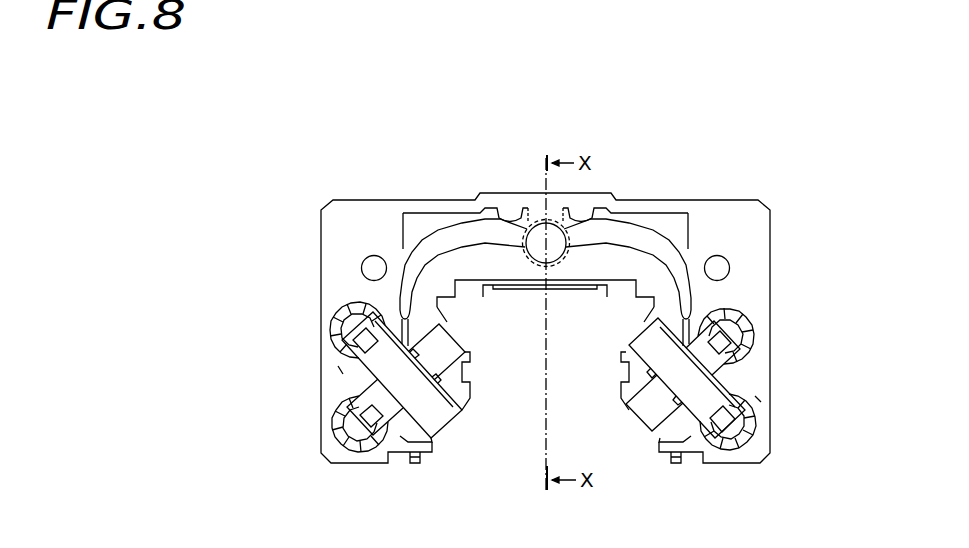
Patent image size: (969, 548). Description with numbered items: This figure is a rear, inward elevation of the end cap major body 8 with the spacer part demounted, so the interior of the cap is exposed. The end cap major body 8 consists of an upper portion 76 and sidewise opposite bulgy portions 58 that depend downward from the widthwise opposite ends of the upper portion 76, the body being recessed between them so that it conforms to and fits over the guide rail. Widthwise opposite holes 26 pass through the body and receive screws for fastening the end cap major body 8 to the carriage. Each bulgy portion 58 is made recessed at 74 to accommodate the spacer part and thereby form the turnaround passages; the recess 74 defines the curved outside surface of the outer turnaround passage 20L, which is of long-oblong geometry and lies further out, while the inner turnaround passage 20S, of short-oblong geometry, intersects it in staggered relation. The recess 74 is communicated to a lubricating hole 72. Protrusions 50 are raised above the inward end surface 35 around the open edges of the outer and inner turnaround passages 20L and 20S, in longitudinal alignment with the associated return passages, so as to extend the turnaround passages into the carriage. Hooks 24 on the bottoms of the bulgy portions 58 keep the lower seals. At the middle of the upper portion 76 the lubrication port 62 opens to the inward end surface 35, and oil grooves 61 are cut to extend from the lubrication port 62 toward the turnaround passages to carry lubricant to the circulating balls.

The end cap major body 8 is at (738, 198).
The inward end surface 35 is at (372, 237).
The hooks 24 is at (411, 464).
The holes 26 is at (370, 266).
The upper portion 76 is at (455, 208).
The oil grooves 61 is at (442, 248).
The lubrication port 62 is at (538, 237).
The outer turnaround passage 20L is at (427, 402).
The inner turnaround passage 20S is at (360, 427).
The recess 74 is at (380, 404).
The protrusions 50 is at (360, 317).
The lubricating hole 72 is at (363, 338).
The bulgy portions 58 is at (340, 371).